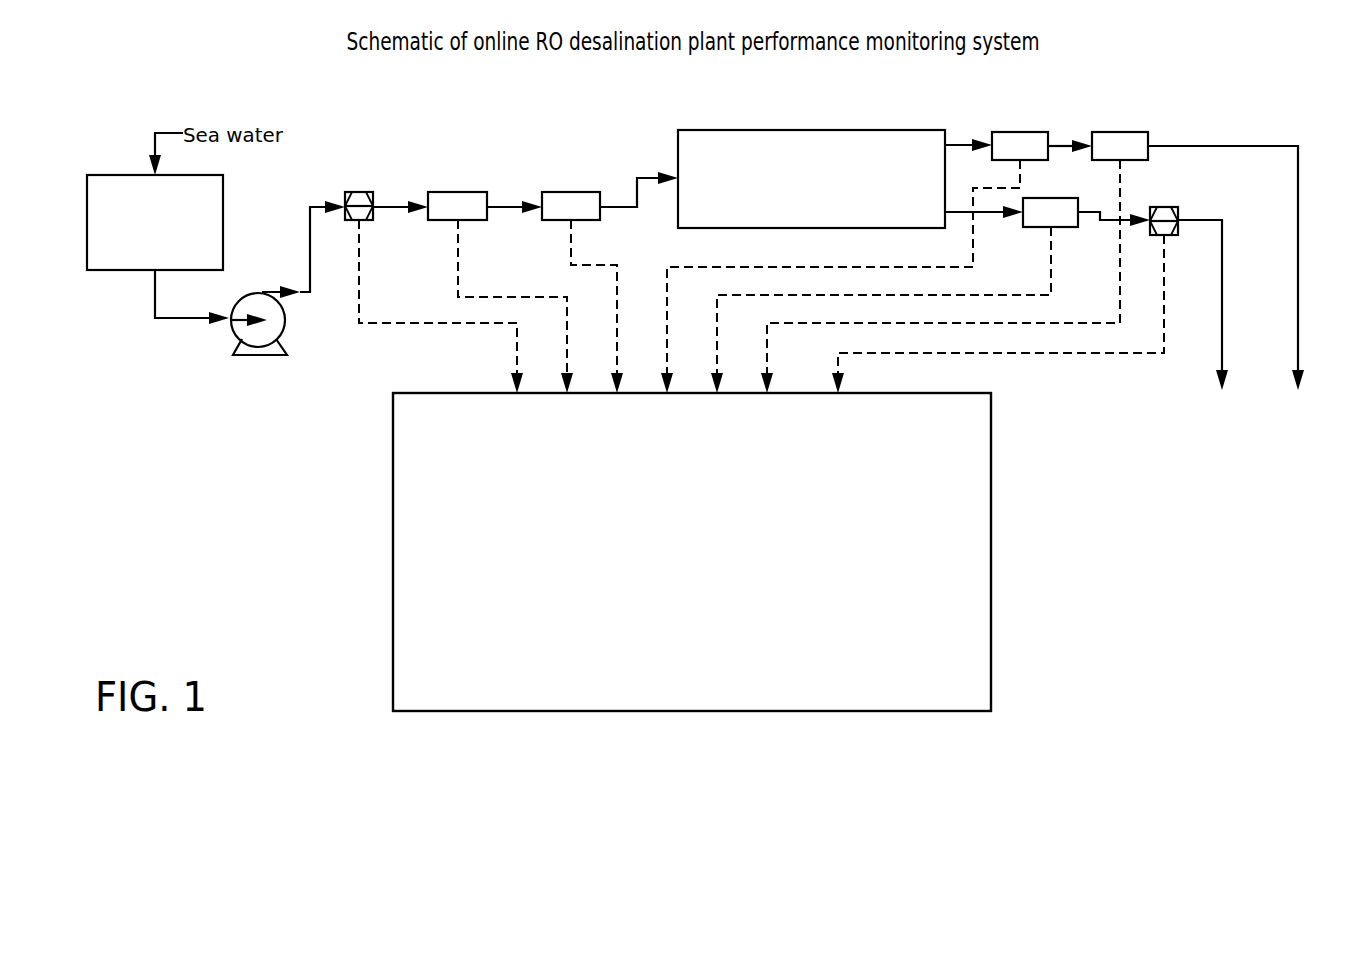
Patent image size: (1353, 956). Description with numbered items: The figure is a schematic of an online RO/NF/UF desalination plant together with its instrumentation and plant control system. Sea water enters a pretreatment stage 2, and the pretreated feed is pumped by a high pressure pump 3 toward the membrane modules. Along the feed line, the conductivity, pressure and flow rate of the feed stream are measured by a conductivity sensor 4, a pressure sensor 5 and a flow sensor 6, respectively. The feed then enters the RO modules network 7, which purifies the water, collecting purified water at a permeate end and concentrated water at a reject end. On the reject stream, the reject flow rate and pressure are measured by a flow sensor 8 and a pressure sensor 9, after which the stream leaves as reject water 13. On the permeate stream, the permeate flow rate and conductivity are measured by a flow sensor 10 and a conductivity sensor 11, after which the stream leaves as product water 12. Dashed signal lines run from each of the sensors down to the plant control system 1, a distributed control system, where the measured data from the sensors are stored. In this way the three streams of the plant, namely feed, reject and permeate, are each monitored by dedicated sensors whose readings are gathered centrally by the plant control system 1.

The plant control system 1 is at (710, 552).
The pretreatment 2 is at (165, 222).
The high pressure pump 3 is at (240, 313).
The conductivity sensor 4 is at (409, 265).
The pressure sensor 5 is at (490, 265).
The flow sensor 6 is at (591, 265).
The RO modules network 7 is at (832, 163).
The flow sensor 8 is at (868, 230).
The pressure sensor 9 is at (966, 230).
The flow sensor 10 is at (922, 285).
The conductivity sensor 11 is at (1053, 280).
The product water 12 is at (1222, 332).
The reject water 13 is at (1247, 295).